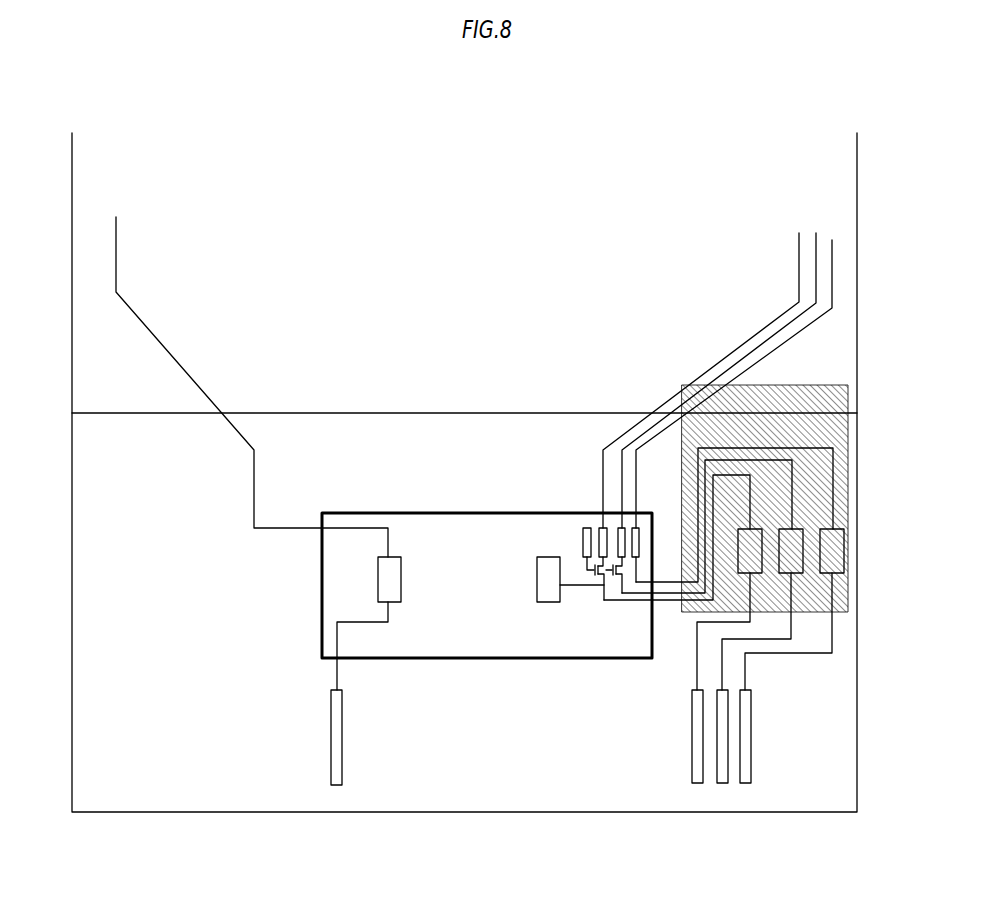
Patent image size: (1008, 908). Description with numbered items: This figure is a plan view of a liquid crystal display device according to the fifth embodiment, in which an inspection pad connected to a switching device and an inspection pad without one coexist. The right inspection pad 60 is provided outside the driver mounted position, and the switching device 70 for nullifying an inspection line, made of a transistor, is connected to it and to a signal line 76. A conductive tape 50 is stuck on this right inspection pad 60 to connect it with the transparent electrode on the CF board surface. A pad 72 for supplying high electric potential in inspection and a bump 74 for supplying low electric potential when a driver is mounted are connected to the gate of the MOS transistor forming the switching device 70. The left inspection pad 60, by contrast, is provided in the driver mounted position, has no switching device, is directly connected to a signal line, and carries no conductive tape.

The conductive tape 50 is at (852, 485).
The inspection pad 60 is at (393, 611).
The switching device for nullifying an inspection line 70 is at (597, 588).
The pad for supplying high electric potential in inspection 72 is at (540, 604).
The bump 74 is at (587, 527).
The signal line 76 is at (747, 352).